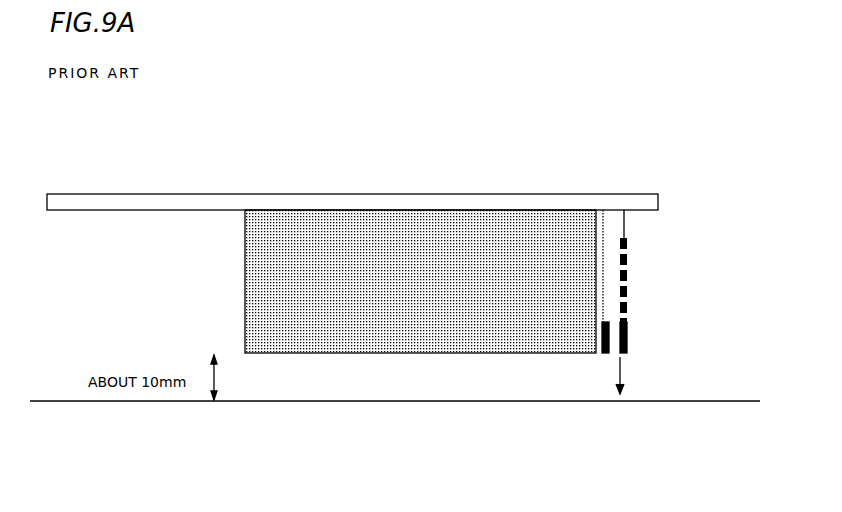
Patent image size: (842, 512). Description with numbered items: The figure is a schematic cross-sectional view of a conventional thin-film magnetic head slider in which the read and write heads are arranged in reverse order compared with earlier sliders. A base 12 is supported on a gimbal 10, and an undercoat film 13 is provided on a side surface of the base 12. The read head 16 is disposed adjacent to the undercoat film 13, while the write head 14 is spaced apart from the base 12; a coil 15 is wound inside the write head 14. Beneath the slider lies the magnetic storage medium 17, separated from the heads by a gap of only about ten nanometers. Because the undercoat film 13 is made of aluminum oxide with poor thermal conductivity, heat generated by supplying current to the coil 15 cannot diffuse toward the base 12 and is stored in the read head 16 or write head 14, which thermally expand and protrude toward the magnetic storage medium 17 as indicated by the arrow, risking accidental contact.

The gimbal 10 is at (232, 194).
The base 12 is at (412, 354).
The undercoat film 13 is at (597, 355).
The write head 14 is at (627, 357).
The coil 15 is at (627, 243).
The read head 16 is at (608, 357).
The magnetic storage medium 17 is at (60, 416).